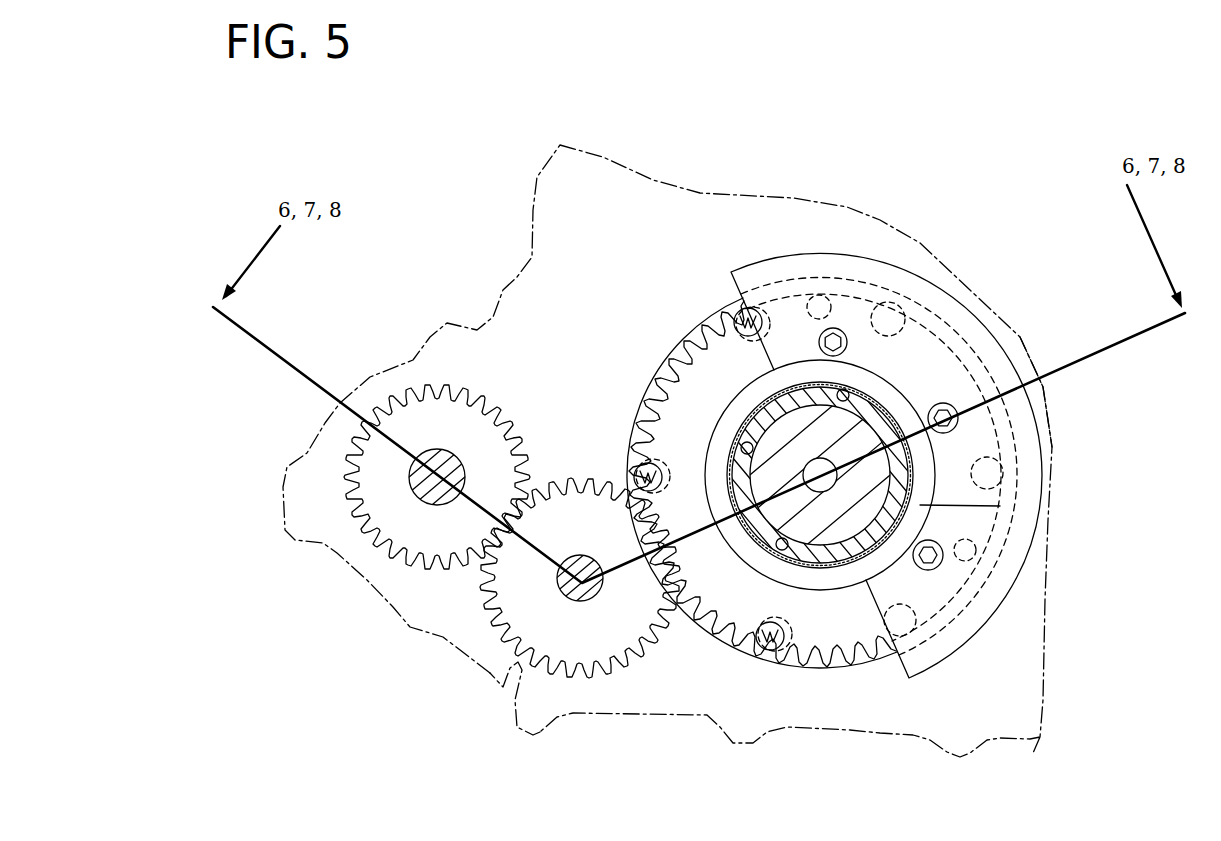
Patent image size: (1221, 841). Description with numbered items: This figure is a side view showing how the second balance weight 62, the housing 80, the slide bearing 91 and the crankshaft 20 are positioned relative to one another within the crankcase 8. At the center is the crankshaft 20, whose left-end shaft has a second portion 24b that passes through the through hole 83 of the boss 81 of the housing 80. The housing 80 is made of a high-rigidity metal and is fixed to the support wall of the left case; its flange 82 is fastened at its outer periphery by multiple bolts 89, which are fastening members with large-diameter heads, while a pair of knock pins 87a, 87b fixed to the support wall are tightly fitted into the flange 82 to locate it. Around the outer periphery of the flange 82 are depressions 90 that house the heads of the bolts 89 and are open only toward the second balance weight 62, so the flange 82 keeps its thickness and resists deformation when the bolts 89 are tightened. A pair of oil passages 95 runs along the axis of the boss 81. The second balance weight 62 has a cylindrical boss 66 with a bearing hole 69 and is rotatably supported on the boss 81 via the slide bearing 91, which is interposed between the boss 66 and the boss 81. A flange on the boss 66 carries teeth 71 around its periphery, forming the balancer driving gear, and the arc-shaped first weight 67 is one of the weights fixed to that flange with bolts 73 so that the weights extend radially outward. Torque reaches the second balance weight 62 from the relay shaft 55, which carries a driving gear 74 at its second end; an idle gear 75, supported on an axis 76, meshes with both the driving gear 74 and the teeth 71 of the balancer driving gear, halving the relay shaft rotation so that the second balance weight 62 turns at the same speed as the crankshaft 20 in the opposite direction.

The crankcase 8 is at (530, 210).
The crankshaft 20 is at (866, 440).
The second portion 24b is at (858, 515).
The relay shaft 55 is at (438, 505).
The second balance weight 62 is at (885, 262).
The boss 66 is at (1000, 506).
The first weight 67 is at (936, 300).
The bearing hole 69 is at (848, 390).
The teeth 71 is at (682, 356).
The bolts 73 is at (932, 570).
The driving gear 74 is at (470, 430).
The idle gear 75 is at (510, 683).
The axis 76 is at (590, 598).
The housing 80 is at (798, 478).
The boss 81 is at (752, 412).
The flange 82 is at (724, 640).
The through hole 83 is at (765, 500).
The knock pin 87a is at (975, 590).
The knock pin 87b is at (808, 295).
The bolts 89 is at (910, 633).
The depressions 90 is at (766, 651).
The slide bearing 91 is at (814, 550).
The oil passages 95 is at (781, 551).